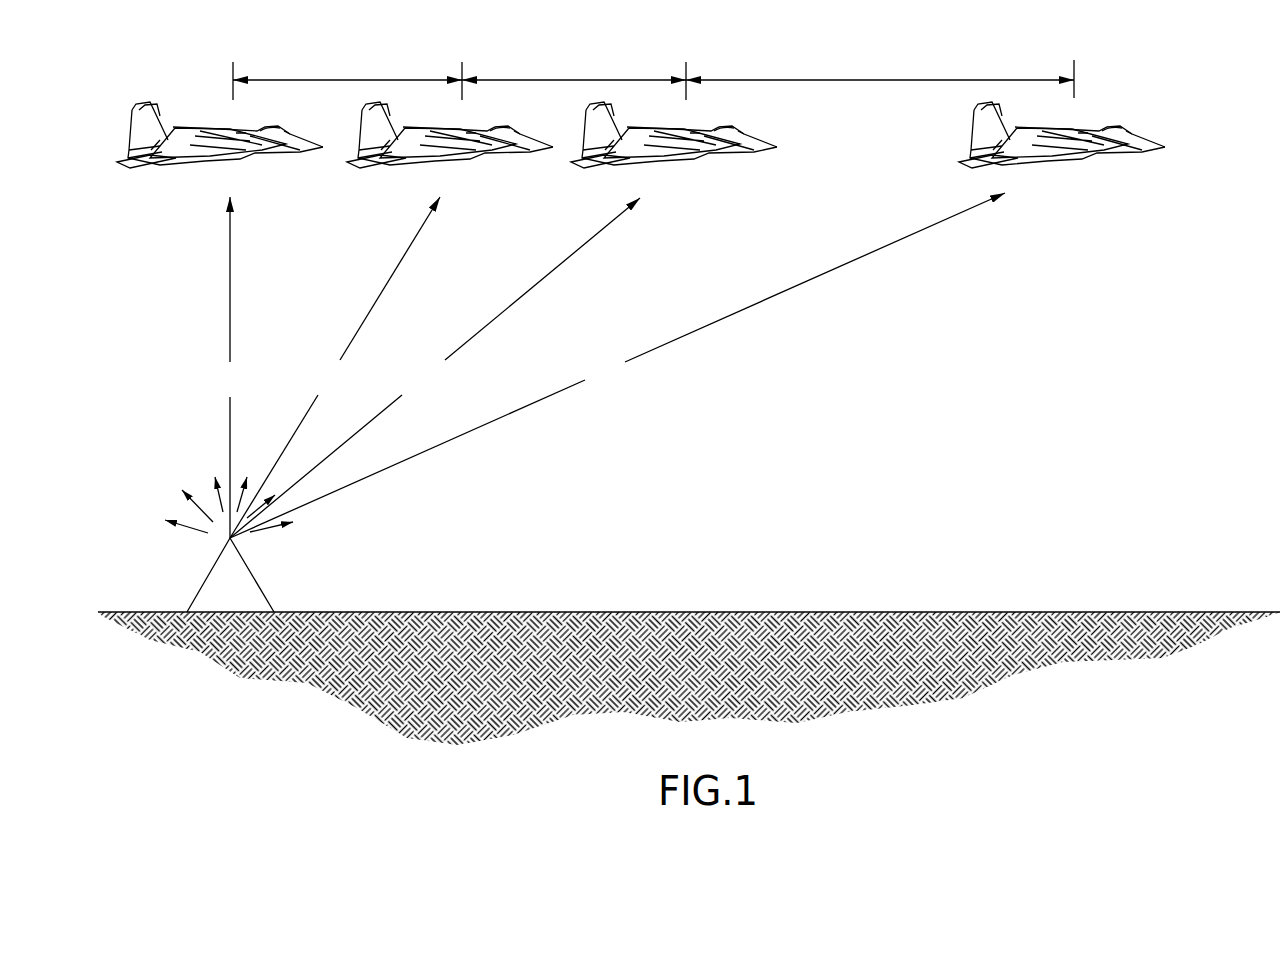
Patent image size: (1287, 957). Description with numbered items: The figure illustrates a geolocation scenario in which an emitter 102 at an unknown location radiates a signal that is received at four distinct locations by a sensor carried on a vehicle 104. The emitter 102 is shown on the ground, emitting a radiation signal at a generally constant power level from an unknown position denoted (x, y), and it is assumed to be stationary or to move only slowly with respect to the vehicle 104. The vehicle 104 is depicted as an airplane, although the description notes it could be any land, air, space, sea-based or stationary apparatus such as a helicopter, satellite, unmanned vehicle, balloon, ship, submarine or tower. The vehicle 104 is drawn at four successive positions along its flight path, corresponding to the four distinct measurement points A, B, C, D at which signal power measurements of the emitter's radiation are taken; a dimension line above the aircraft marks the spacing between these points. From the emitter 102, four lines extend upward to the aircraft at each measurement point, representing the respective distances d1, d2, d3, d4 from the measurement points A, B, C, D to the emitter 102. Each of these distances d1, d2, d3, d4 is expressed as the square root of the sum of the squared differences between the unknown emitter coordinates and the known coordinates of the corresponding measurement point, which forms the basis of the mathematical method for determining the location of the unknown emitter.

The emitter 102 is at (253, 575).
The vehicle 104 is at (205, 165).
The measurement point A is at (233, 61).
The measurement point B is at (462, 61).
The measurement point C is at (686, 61).
The measurement point D is at (1074, 60).
The distance from measurement point A to the emitter d1 is at (229, 367).
The distance from measurement point B to the emitter d2 is at (335, 367).
The distance from measurement point C to the emitter d3 is at (435, 368).
The distance from measurement point D to the emitter d4 is at (617, 365).